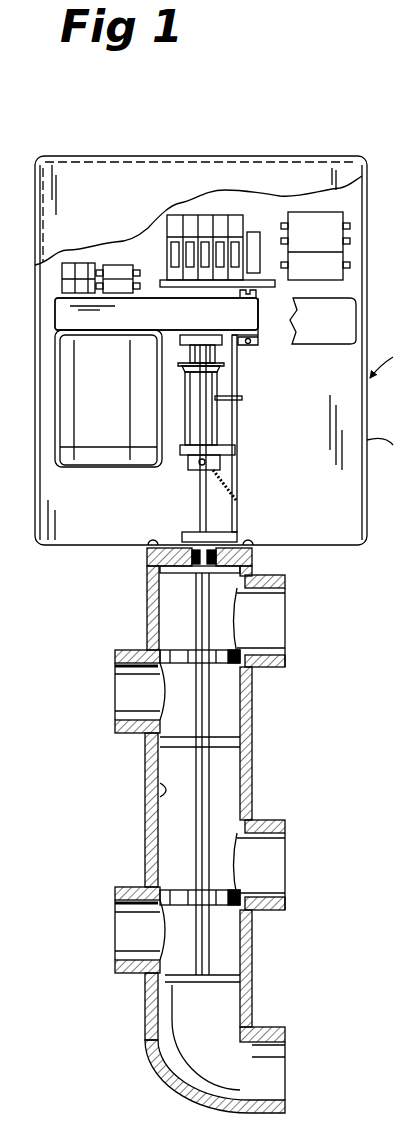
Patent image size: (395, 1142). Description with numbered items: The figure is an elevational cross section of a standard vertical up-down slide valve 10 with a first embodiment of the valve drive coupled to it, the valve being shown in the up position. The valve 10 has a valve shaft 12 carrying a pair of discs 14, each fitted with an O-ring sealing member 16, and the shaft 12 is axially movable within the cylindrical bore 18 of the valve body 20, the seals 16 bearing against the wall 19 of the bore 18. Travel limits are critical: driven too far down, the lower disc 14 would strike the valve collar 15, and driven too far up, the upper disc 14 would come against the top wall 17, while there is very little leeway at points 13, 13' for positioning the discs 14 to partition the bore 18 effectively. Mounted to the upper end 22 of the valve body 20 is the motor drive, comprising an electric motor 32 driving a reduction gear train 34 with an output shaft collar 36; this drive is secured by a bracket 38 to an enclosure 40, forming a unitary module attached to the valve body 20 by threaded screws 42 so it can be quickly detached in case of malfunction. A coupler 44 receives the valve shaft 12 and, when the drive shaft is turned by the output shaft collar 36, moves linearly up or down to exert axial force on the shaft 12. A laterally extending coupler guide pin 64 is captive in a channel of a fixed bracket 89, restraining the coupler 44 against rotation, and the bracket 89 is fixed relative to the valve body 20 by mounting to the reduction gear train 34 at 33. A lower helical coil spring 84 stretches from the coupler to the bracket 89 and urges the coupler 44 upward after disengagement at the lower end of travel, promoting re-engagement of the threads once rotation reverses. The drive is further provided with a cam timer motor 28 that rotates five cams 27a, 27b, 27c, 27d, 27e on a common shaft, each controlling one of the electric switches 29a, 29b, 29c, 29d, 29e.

The vertical up-down slide valve 10 is at (132, 791).
The valve shaft 12 is at (195, 693).
The positioning point 13 is at (165, 637).
The positioning point 13' is at (165, 912).
The discs 14 is at (228, 645).
The valve collar 15 is at (222, 980).
The O-ring sealing member 16 is at (247, 666).
The top wall 17 is at (175, 570).
The cylindrical bore 18 is at (238, 775).
The wall of the valve bore 19 is at (162, 788).
The valve body 20 is at (148, 831).
The upper end of the valve body 22 is at (258, 557).
The cam 27a is at (172, 250).
The cam 27b is at (176, 265).
The cam 27c is at (178, 277).
The cam 27d is at (205, 278).
The cam 27e is at (238, 257).
The cam timer motor 28 is at (254, 233).
The electric switch 29a is at (172, 226).
The electric switch 29b is at (188, 222).
The electric switch 29c is at (203, 215).
The electric switch 29d is at (224, 215).
The electric switch 29e is at (236, 220).
The electric motor 32 is at (102, 466).
The mounting point 33 is at (262, 342).
The reduction gear train 34 is at (97, 319).
The output shaft collar 36 is at (188, 352).
The bracket 38 is at (288, 306).
The enclosure 40 is at (315, 153).
The threaded screws 42 is at (153, 540).
The coupler 44 is at (213, 387).
The coupler guide pin 64 is at (243, 398).
The helical coil spring 84 is at (237, 478).
The bracket 89 is at (238, 418).